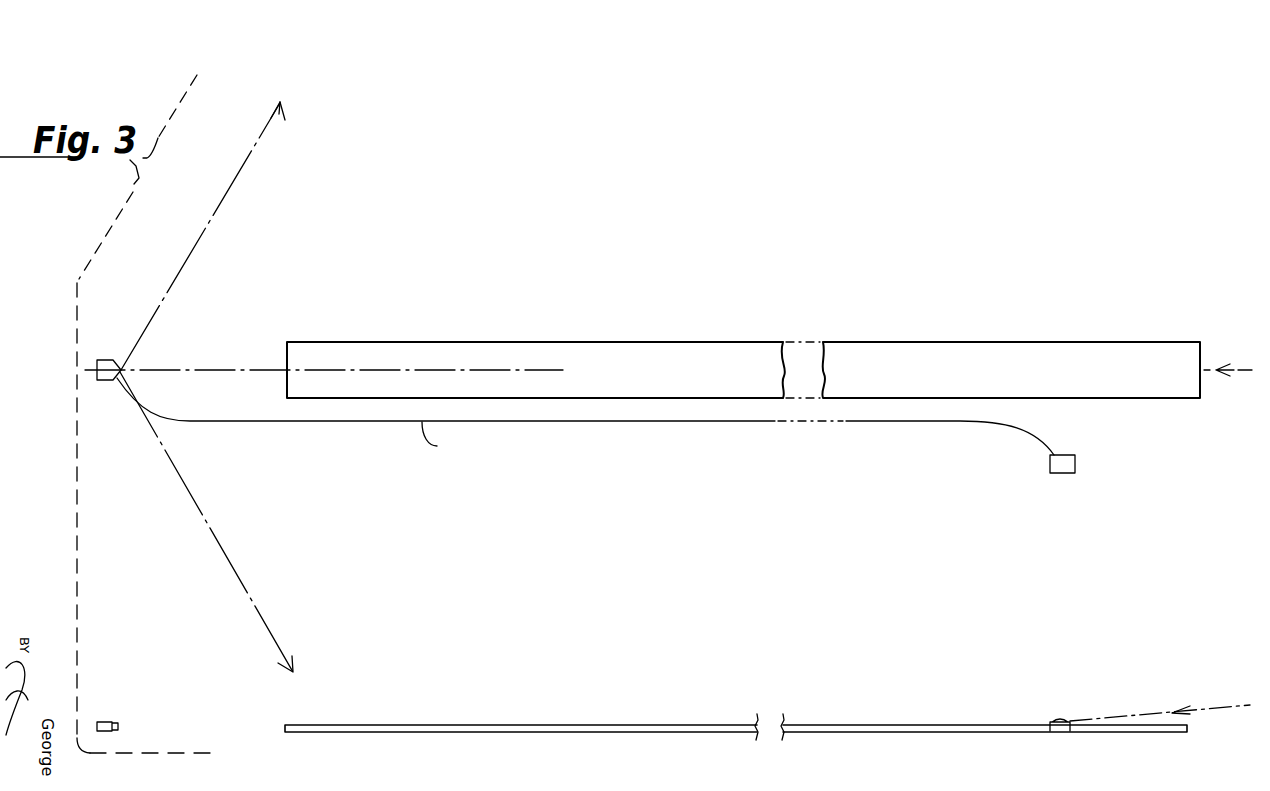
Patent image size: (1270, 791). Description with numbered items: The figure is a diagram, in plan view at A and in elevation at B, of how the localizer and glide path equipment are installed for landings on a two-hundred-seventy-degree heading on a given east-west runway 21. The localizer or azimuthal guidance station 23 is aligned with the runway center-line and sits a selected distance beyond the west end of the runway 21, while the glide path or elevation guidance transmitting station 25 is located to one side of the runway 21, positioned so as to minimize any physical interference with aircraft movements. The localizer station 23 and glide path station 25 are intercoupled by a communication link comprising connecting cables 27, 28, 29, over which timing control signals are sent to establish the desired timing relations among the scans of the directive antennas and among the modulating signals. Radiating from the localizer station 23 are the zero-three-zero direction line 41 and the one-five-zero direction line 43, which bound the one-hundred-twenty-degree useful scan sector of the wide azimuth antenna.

The runway 21 is at (548, 352).
The localizer station 23 is at (110, 367).
The glide path station 25 is at (1070, 462).
The cable 27 is at (585, 422).
The cable 28 is at (585, 422).
The cable 29 is at (663, 422).
The 030° direction line 41 is at (238, 173).
The 150° direction line 43 is at (250, 592).